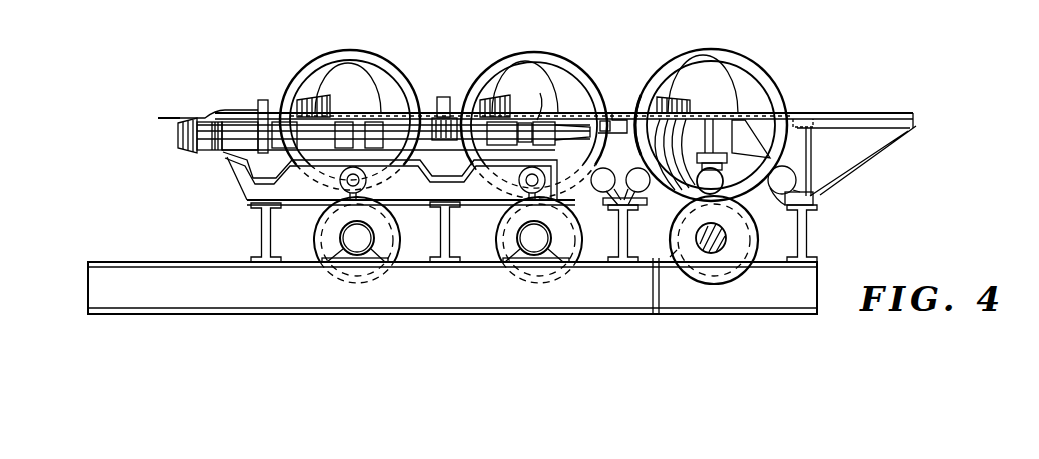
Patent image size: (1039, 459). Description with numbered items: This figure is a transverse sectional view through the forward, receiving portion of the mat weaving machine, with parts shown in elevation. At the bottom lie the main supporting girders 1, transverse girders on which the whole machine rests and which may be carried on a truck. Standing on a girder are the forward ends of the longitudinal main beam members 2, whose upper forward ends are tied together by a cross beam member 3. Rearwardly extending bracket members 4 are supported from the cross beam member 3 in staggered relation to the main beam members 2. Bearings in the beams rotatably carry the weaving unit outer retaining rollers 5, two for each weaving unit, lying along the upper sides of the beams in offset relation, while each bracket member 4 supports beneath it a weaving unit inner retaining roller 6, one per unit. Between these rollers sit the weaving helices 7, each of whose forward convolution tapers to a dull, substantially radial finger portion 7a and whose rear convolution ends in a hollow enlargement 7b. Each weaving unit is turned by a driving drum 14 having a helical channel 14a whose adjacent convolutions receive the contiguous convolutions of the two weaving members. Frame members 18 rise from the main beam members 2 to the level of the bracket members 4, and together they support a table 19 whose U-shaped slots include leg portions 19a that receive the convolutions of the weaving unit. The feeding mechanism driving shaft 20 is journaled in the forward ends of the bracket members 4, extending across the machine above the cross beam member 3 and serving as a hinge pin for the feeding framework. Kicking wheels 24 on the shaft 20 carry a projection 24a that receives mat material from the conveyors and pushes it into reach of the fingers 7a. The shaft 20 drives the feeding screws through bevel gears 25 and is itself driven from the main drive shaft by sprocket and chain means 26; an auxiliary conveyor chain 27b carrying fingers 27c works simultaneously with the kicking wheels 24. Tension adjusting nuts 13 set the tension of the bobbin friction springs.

The main supporting girders 1 is at (162, 280).
The main beam members 2 is at (262, 222).
The cross beam member 3 is at (250, 196).
The bracket members 4 is at (701, 118).
The weaving unit outer retaining rollers 5 is at (625, 230).
The weaving unit inner retaining roller 6 is at (700, 183).
The weaving helices 7 is at (361, 58).
The finger portion 7a is at (780, 107).
The hollow enlargement 7b is at (487, 97).
The tension adjusting nuts 13 is at (495, 229).
The driving drum 14 is at (730, 257).
The helical channel 14a is at (668, 256).
The frame members 18 is at (883, 155).
The table 19 is at (670, 103).
The leg portions 19a is at (795, 113).
The feeding mechanism driving shaft 20 is at (313, 133).
The kicking wheels 24 is at (254, 110).
The projection 24a is at (263, 100).
The bevel gears 25 is at (183, 150).
The sprocket and chain means 26 is at (210, 150).
The chain 27b is at (428, 97).
The fingers 27c is at (437, 110).